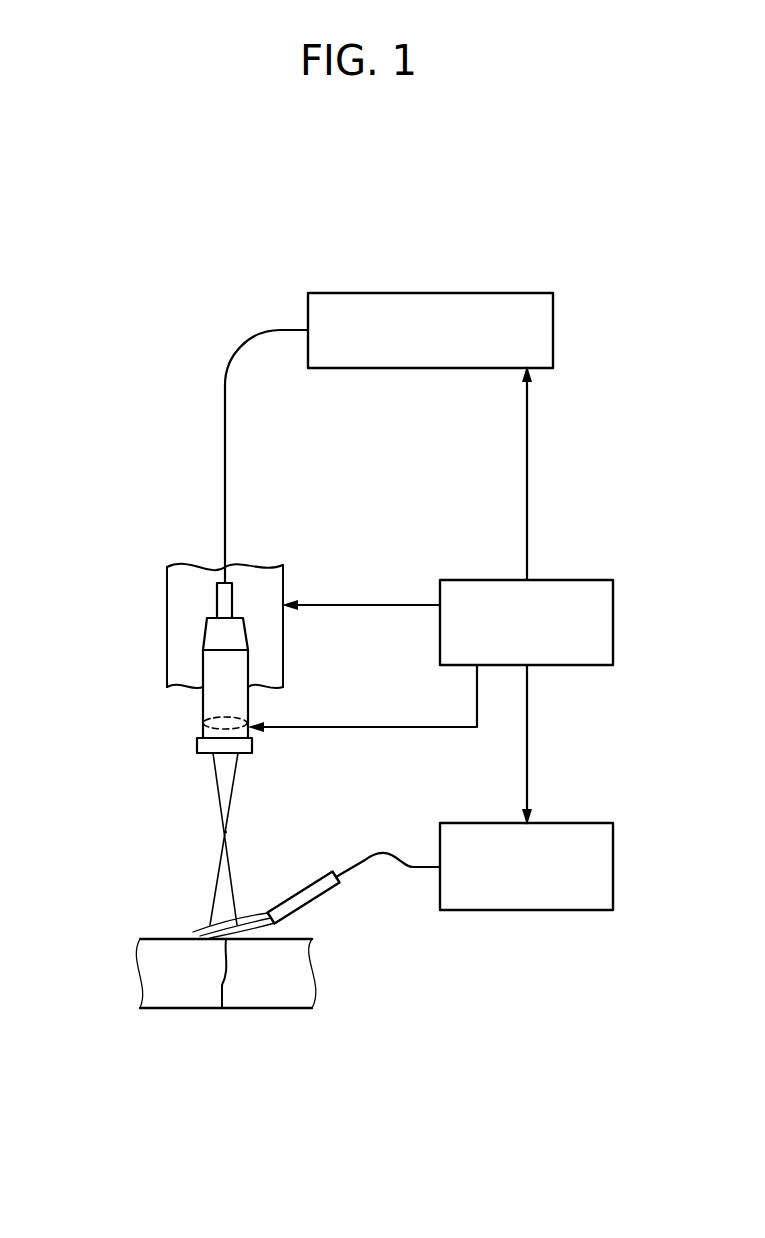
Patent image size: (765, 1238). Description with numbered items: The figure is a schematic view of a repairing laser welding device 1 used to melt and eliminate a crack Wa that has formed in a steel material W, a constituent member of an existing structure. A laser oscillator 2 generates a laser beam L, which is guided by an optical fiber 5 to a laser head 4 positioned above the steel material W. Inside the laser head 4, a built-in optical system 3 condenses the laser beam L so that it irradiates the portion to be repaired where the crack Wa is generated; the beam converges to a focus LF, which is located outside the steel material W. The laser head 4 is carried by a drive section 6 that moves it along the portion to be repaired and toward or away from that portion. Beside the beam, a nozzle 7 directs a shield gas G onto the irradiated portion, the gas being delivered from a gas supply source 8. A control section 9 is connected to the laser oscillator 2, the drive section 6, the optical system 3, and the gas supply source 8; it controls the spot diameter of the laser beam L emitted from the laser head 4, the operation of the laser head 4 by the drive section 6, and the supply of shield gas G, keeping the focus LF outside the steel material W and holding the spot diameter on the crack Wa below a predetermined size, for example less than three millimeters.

The repairing laser welding device 1 is at (158, 388).
The laser oscillator 2 is at (358, 307).
The optical system 3 is at (203, 720).
The laser head 4 is at (210, 665).
The optical fiber 5 is at (225, 465).
The drive section 6 is at (173, 600).
The nozzle 7 is at (318, 890).
The gas supply source 8 is at (600, 847).
The control section 9 is at (597, 603).
The laser beam L is at (217, 787).
The focus LF is at (225, 833).
The shield gas G is at (205, 928).
The steel material W is at (153, 973).
The crack Wa is at (230, 975).